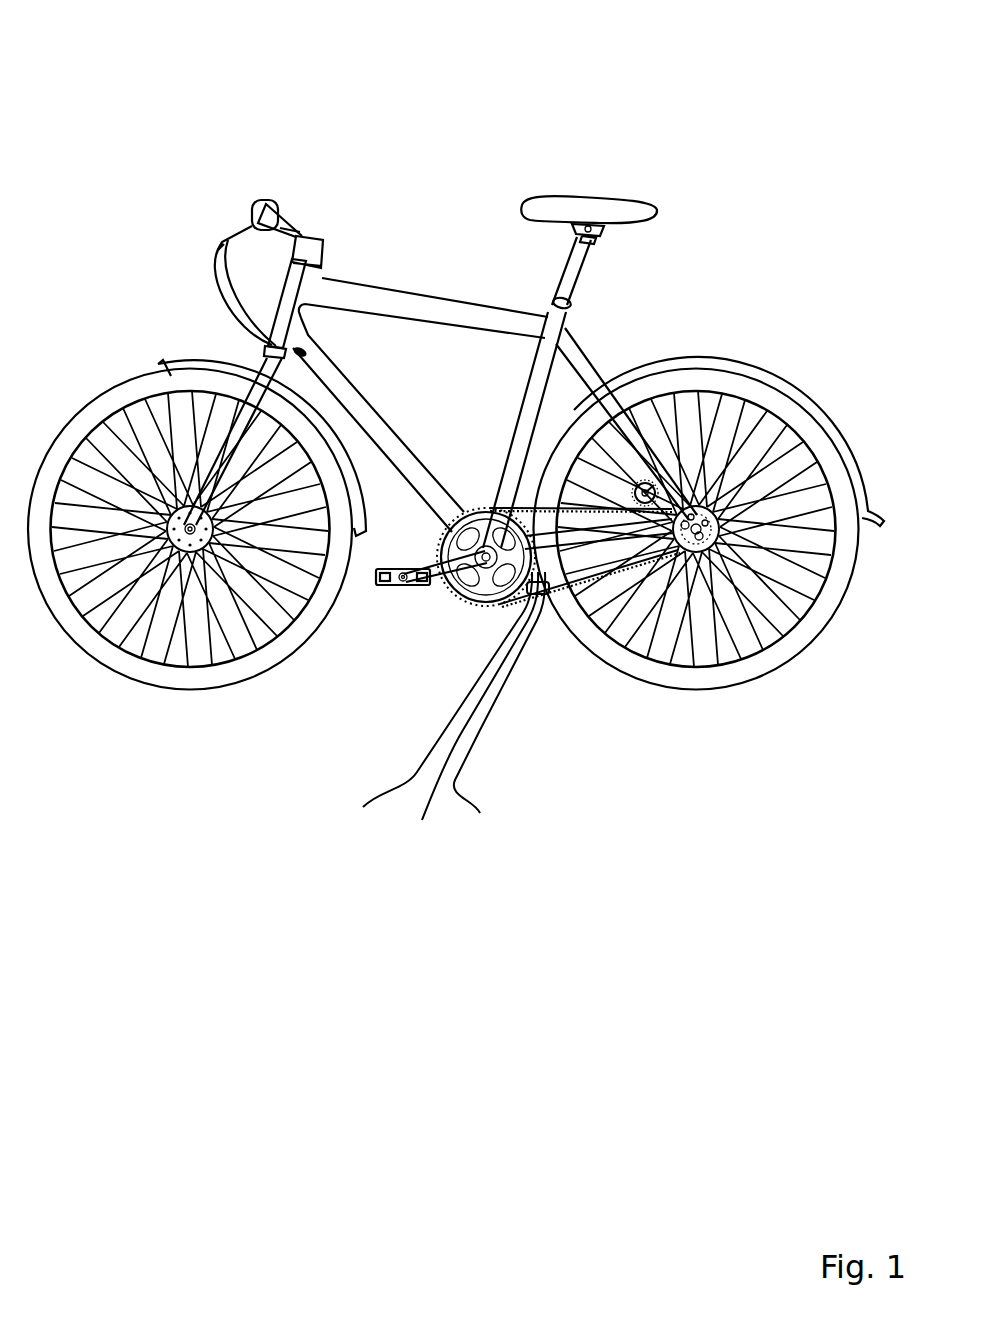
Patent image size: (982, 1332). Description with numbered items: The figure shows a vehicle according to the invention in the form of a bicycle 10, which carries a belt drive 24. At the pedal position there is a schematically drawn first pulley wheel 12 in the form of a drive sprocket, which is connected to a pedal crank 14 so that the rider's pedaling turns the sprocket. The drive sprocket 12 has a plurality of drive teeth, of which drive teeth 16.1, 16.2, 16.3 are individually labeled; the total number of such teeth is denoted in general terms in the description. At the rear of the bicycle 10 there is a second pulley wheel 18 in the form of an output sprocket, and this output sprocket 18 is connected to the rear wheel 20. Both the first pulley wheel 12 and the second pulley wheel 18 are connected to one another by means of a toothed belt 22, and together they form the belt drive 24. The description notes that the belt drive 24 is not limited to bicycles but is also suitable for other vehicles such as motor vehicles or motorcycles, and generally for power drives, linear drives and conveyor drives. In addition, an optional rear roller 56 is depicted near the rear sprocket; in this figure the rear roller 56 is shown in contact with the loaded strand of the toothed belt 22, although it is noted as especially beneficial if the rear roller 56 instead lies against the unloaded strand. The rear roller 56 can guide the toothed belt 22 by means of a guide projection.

The bicycle 10 is at (845, 56).
The first pulley wheel 12 is at (496, 600).
The pedal crank 14 is at (376, 587).
The drive tooth 16.1 is at (432, 704).
The drive tooth 16.2 is at (465, 714).
The drive tooth 16.3 is at (499, 707).
The second pulley wheel 18 is at (722, 528).
The rear wheel 20 is at (773, 694).
The toothed belt 22 is at (588, 578).
The belt drive 24 is at (468, 466).
The rear roller 56 is at (641, 483).